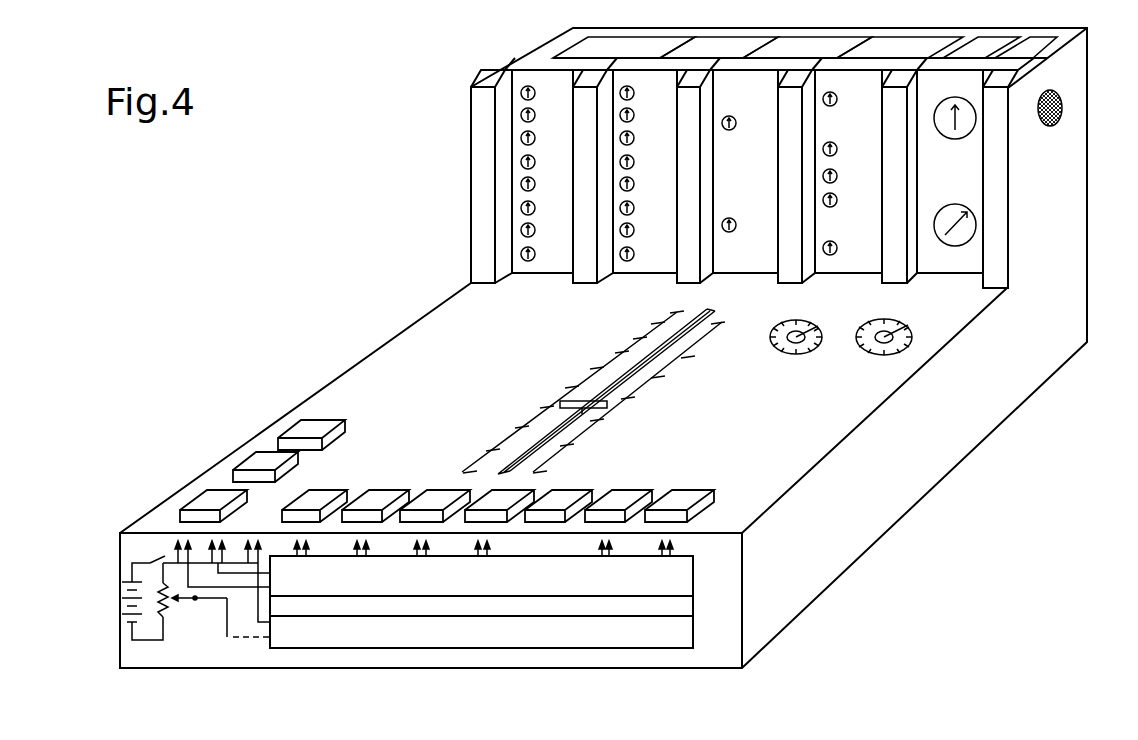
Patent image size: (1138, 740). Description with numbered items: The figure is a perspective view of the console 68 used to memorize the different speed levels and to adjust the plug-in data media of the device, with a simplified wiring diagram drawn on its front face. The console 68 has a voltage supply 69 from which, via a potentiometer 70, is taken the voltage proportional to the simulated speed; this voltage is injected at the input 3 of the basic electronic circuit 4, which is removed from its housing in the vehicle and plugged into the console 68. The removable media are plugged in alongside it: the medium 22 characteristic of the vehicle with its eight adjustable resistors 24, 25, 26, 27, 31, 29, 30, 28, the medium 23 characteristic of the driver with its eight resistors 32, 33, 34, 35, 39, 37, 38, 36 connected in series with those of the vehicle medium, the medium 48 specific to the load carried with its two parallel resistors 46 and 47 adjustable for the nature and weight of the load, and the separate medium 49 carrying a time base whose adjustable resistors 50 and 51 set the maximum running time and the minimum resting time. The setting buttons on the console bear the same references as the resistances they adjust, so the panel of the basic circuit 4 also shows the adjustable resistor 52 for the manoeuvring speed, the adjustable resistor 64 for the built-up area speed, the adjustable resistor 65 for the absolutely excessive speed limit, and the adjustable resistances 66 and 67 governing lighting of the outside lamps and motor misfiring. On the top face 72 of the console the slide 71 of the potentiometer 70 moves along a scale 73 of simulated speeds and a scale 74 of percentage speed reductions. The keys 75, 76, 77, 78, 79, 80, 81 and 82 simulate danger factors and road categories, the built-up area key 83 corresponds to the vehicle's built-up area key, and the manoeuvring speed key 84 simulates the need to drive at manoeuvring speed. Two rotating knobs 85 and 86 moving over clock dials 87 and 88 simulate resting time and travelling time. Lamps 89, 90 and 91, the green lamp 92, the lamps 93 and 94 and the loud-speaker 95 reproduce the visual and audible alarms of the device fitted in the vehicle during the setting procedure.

The input 3 is at (264, 640).
The basic electronic circuit 4 is at (848, 80).
The medium characteristic of the vehicle 22 is at (518, 72).
The medium characteristic of the driver 23 is at (645, 80).
The adjustable resistor 24 is at (535, 93).
The adjustable resistor 25 is at (535, 115).
The adjustable resistor 26 is at (535, 138).
The adjustable resistor 27 is at (535, 162).
The adjustable resistor 28 is at (535, 254).
The adjustable resistor 29 is at (535, 208).
The adjustable resistor 30 is at (535, 230).
The adjustable resistor 31 is at (535, 184).
The resistor 32 is at (634, 93).
The resistor 33 is at (634, 115).
The resistor 34 is at (634, 138).
The resistor 35 is at (634, 162).
The resistor 36 is at (634, 254).
The resistor 37 is at (634, 208).
The resistor 38 is at (634, 230).
The resistor 39 is at (634, 184).
The resistor 46 is at (736, 126).
The resistor 47 is at (736, 222).
The medium specific to the load carried 48 is at (752, 83).
The separate medium with time base 49 is at (943, 80).
The adjustable resistor 50 is at (968, 135).
The adjustable resistor 51 is at (965, 207).
The adjustable resistor 52 is at (838, 150).
The adjustable resistor 64 is at (837, 103).
The adjustable resistor 65 is at (838, 177).
The adjustable resistance 66 is at (838, 204).
The adjustable resistance 67 is at (838, 249).
The console 68 is at (320, 363).
The voltage supply 69 is at (118, 607).
The potentiometer 70 is at (168, 613).
The slide 71 is at (608, 406).
The control panel surface 72 is at (810, 440).
The scale 73 is at (582, 375).
The scale 74 is at (672, 366).
The key 75 is at (685, 497).
The key 76 is at (620, 497).
The key 77 is at (568, 498).
The key 78 is at (508, 491).
The key 79 is at (257, 463).
The key 80 is at (322, 495).
The key 81 is at (207, 498).
The key 82 is at (378, 497).
The built-up area key 83 is at (432, 497).
The manoeuvring speed key 84 is at (317, 427).
The rotating knob 85 is at (776, 349).
The rotating knob 86 is at (858, 350).
The clock dial 87 is at (815, 348).
The clock dial 88 is at (895, 351).
The lamp 89 is at (882, 45).
The lamp 90 is at (980, 50).
The lamp 91 is at (1027, 45).
The green lamp 92 is at (597, 42).
The lamp 93 is at (713, 47).
The lamp 94 is at (803, 45).
The loud-speaker 95 is at (1064, 111).